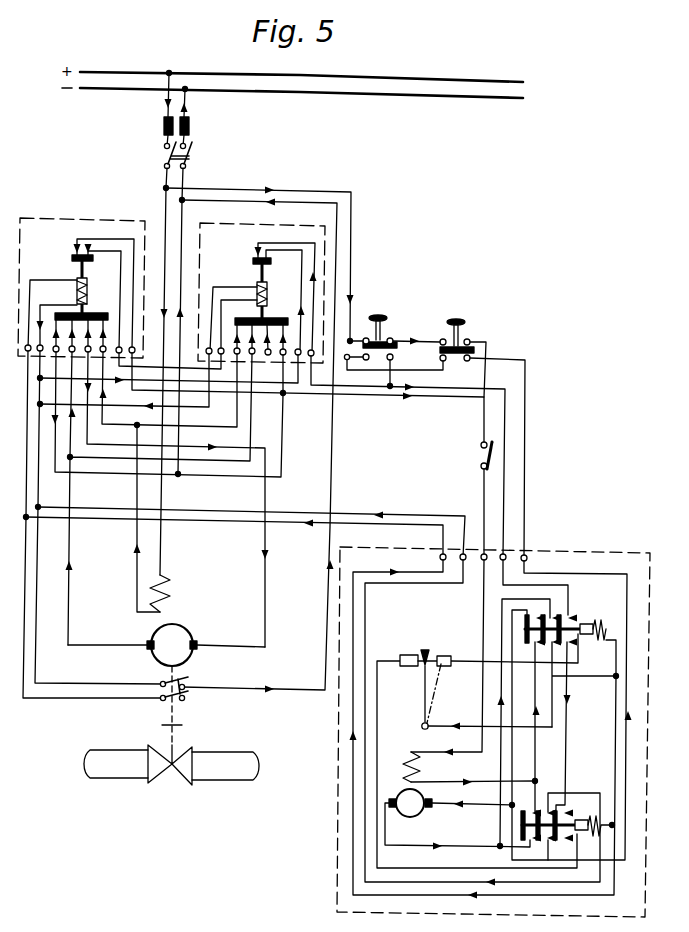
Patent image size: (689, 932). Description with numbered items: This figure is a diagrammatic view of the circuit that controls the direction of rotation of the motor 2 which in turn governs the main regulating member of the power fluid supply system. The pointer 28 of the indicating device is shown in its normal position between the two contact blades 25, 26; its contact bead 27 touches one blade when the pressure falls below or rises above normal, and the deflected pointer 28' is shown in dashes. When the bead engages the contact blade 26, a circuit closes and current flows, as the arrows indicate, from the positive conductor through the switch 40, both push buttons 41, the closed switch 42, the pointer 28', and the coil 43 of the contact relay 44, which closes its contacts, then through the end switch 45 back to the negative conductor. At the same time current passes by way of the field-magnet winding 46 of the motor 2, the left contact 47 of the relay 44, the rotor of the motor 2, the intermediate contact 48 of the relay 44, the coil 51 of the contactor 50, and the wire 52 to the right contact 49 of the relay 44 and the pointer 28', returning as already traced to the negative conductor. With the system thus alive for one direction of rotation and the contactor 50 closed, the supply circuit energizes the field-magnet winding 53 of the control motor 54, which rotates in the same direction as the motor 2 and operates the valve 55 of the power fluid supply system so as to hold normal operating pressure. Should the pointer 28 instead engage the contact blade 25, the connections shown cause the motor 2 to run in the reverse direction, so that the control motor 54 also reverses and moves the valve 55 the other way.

The motor 2 is at (412, 810).
The contact blade 25 is at (409, 655).
The contact blade 26 is at (444, 656).
The contact bead 27 is at (430, 649).
The pointer 28 is at (408, 697).
The pointer 28' is at (446, 693).
The switch 40 is at (188, 160).
The push buttons 41 is at (461, 320).
The switch 42 is at (481, 457).
The coil 43 is at (582, 646).
The contact relay 44 is at (590, 624).
The end switch 45 is at (161, 701).
The field-magnet winding 46 is at (410, 750).
The left contact 47 is at (531, 641).
The relay contact 48 is at (550, 658).
The right contact 49 is at (566, 616).
The contactor 50 is at (89, 291).
The coil 51 is at (76, 290).
The wire 52 is at (52, 374).
The field-magnet winding 53 is at (180, 596).
The control motor 54 is at (188, 638).
The valve 55 is at (183, 780).